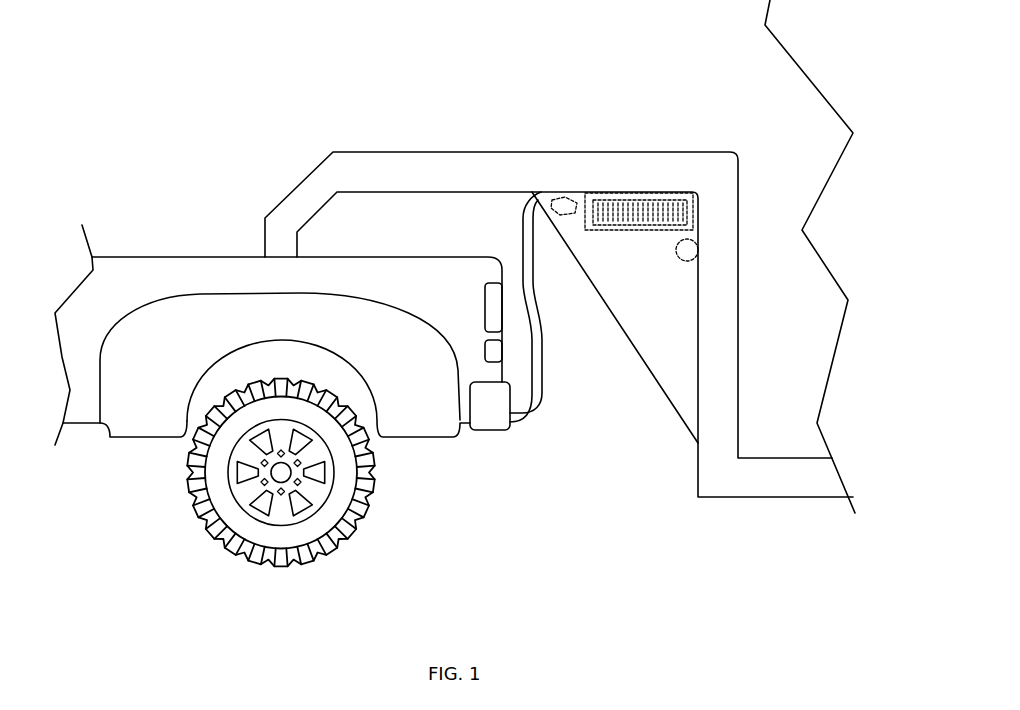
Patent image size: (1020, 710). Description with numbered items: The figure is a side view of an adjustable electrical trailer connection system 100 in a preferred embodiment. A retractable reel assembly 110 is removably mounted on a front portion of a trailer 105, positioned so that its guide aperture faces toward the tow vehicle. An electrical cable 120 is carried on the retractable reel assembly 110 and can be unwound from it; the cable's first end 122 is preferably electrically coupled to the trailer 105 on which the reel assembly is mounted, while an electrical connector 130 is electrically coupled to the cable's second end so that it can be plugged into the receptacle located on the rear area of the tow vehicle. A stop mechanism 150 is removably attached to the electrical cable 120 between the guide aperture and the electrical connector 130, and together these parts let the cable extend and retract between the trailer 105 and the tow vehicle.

The adjustable electrical trailer connection system 100 is at (575, 43).
The trailer 105 is at (478, 152).
The retractable reel assembly 110 is at (660, 192).
The electrical cable 120 is at (545, 342).
The first end 122 is at (697, 246).
The electrical connector 130 is at (575, 344).
The stop mechanism 150 is at (567, 189).